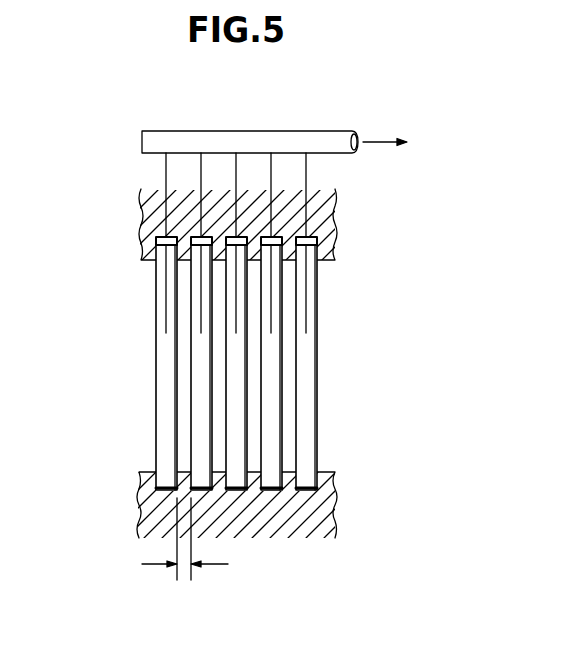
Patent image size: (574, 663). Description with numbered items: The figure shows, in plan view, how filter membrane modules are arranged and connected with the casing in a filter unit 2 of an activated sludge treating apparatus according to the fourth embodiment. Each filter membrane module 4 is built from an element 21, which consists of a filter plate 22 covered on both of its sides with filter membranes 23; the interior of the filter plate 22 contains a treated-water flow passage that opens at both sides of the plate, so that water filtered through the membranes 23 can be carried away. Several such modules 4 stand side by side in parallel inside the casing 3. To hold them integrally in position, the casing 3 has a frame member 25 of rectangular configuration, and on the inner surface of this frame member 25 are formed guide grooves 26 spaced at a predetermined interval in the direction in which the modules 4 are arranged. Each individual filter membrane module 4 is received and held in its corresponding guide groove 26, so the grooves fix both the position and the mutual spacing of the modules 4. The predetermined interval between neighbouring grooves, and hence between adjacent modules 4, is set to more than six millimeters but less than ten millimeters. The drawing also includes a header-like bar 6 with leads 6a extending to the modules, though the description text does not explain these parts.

The header bar / feed pipe 6 is at (252, 142).
The lead wires 6a is at (204, 170).
The frame member 25 is at (323, 225).
The guide grooves 26 is at (170, 228).
The filter unit 2 is at (144, 383).
The filter membrane module 4 is at (323, 320).
The element 21 is at (318, 372).
The filter plate 22 is at (302, 404).
The filter membranes 23 is at (318, 423).
The casing 3 is at (326, 469).